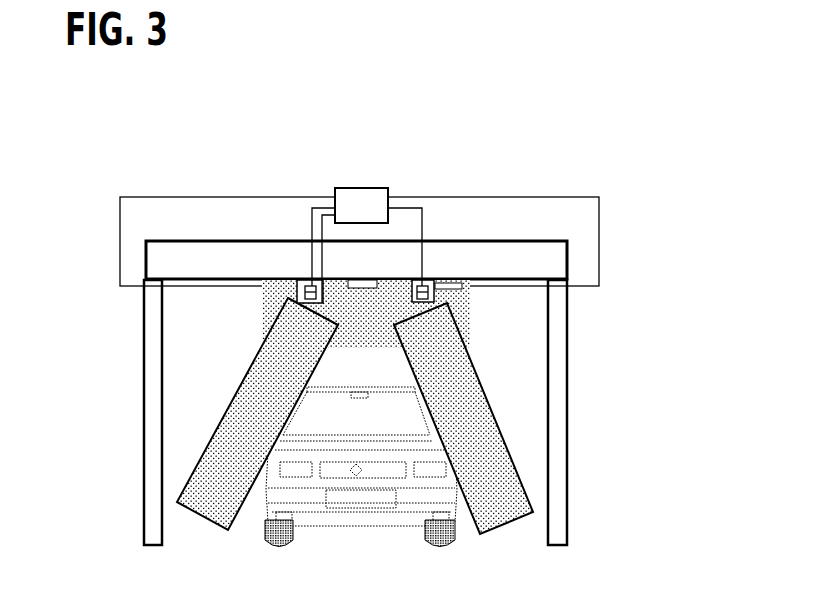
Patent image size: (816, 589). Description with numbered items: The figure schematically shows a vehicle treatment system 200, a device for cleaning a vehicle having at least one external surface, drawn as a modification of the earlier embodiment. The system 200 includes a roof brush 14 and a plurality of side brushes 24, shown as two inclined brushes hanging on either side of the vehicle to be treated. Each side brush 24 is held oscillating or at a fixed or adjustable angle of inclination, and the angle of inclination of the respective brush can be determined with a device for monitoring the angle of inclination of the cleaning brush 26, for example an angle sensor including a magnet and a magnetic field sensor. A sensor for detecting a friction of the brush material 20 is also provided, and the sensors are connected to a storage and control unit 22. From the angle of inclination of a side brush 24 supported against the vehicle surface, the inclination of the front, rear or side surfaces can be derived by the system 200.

The device for cleaning a vehicle 200 is at (112, 157).
The sensor for detecting a friction of the brush material 20 is at (297, 293).
The storage and control unit 22 is at (335, 188).
The roof brush 14 is at (418, 280).
The device for monitoring the angle of inclination of the cleaning brush 26 is at (290, 297).
The side brush 24 is at (187, 473).